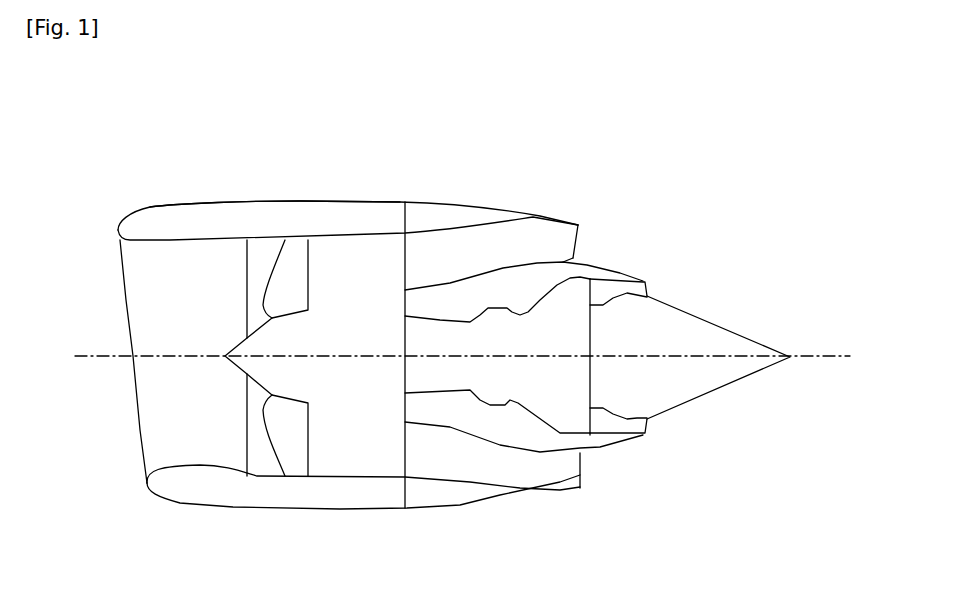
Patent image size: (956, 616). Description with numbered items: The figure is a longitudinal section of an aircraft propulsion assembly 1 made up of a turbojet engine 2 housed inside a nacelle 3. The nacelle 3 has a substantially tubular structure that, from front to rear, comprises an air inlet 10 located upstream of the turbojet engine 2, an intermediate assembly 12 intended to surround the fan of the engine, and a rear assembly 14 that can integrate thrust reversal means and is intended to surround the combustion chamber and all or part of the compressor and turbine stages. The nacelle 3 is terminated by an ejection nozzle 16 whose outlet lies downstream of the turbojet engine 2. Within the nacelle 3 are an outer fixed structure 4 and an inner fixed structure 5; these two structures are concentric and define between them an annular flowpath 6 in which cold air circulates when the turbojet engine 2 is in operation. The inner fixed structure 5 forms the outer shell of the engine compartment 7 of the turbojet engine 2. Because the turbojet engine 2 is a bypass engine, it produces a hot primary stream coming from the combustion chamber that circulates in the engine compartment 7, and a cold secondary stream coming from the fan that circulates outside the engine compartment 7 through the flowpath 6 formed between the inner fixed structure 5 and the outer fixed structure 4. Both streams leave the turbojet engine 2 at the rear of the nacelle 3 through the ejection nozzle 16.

The aircraft propulsion assembly 1 is at (592, 188).
The turbojet engine 2 is at (360, 455).
The nacelle 3 is at (150, 222).
The outer fixed structure 4 is at (533, 216).
The inner fixed structure 5 is at (570, 250).
The annular flowpath 6 is at (462, 457).
The engine compartment 7 is at (497, 380).
The air inlet 10 is at (108, 231).
The intermediate assembly 12 is at (313, 200).
The rear assembly 14 is at (405, 200).
The ejection nozzle 16 is at (594, 253).